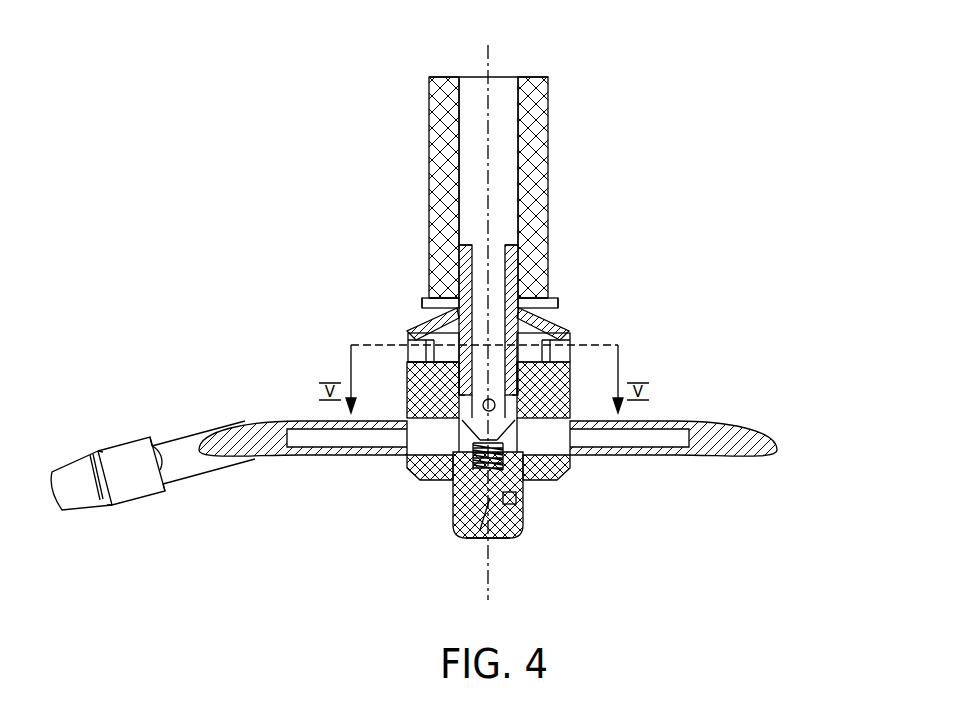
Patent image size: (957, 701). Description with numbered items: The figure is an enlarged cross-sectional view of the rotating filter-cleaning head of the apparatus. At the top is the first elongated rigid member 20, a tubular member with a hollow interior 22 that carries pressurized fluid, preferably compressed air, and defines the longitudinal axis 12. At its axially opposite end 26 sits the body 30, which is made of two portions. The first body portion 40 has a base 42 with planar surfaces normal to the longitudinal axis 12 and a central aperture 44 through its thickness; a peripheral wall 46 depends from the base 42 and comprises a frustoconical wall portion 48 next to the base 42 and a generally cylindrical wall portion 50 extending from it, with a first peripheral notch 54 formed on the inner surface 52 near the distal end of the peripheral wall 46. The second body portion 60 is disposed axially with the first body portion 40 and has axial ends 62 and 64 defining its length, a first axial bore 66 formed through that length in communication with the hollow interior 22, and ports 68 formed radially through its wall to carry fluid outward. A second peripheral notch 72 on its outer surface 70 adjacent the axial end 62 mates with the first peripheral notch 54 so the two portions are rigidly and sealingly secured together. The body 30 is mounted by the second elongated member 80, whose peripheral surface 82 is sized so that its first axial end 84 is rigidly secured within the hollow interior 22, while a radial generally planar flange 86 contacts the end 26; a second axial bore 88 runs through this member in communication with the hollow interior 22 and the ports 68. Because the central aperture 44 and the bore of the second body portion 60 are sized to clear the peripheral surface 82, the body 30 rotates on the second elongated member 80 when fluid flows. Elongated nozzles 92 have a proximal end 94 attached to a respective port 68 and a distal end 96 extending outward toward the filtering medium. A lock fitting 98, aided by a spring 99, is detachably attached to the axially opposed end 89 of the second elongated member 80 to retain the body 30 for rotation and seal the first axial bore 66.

The longitudinal axis 12 is at (490, 48).
The first elongated rigid member 20 is at (540, 100).
The hollow interior 22 is at (513, 152).
The axially opposite end 26 is at (548, 232).
The body 30 is at (417, 473).
The first body portion 40 is at (486, 306).
The base 42 is at (560, 320).
The central aperture 44 is at (432, 265).
The peripheral wall 46 is at (568, 330).
The frustoconical wall portion 48 is at (416, 330).
The generally cylindrical wall portion 50 is at (408, 345).
The inner surface 52 is at (410, 355).
The first peripheral notch 54 is at (410, 367).
The second body portion 60 is at (491, 466).
The axial end 62 is at (428, 300).
The axial end 64 is at (436, 490).
The first axial bore 66 is at (407, 398).
The port 68 is at (407, 460).
The outer surface 70 is at (500, 403).
The second peripheral notch 72 is at (565, 358).
The second elongated member 80 is at (527, 301).
The peripheral surface 82 is at (548, 266).
The first axial end 84 is at (430, 232).
The radial generally planar flange 86 is at (561, 291).
The second axial bore 88 is at (478, 294).
The axially opposed end 89 is at (506, 480).
The elongated nozzle 92 is at (252, 425).
The proximal end 94 is at (506, 466).
The distal end 96 is at (125, 512).
The lock fitting 98 is at (505, 545).
The spring 99 is at (483, 530).